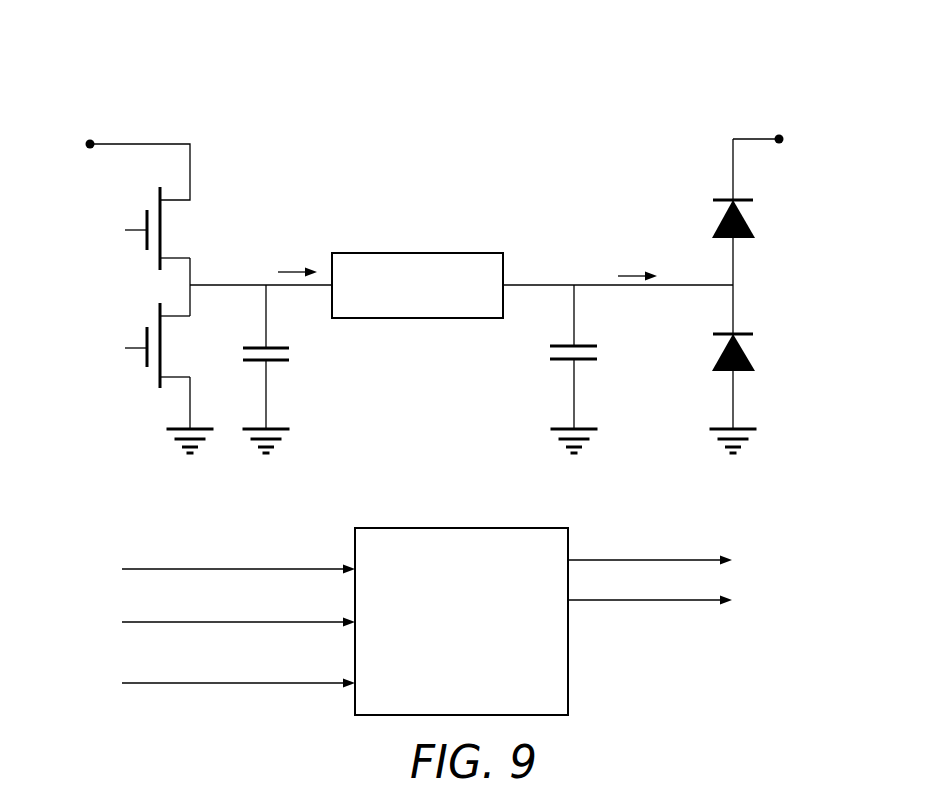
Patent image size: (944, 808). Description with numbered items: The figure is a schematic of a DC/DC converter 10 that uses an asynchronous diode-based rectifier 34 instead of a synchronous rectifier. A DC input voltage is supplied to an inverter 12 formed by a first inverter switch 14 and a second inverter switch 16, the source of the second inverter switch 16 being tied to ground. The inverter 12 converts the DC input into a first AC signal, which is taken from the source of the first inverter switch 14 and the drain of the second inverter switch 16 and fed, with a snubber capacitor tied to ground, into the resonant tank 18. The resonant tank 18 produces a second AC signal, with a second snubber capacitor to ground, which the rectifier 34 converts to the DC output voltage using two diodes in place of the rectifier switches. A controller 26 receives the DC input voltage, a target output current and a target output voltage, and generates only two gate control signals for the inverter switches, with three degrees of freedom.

The DC/DC converter 10 is at (501, 110).
The inverter 12 is at (206, 170).
The first inverter switch 14 is at (217, 227).
The second inverter switch 16 is at (203, 360).
The resonant tank 18 is at (425, 253).
The controller 26 is at (480, 528).
The asynchronous diode-based rectifier 34 is at (700, 170).